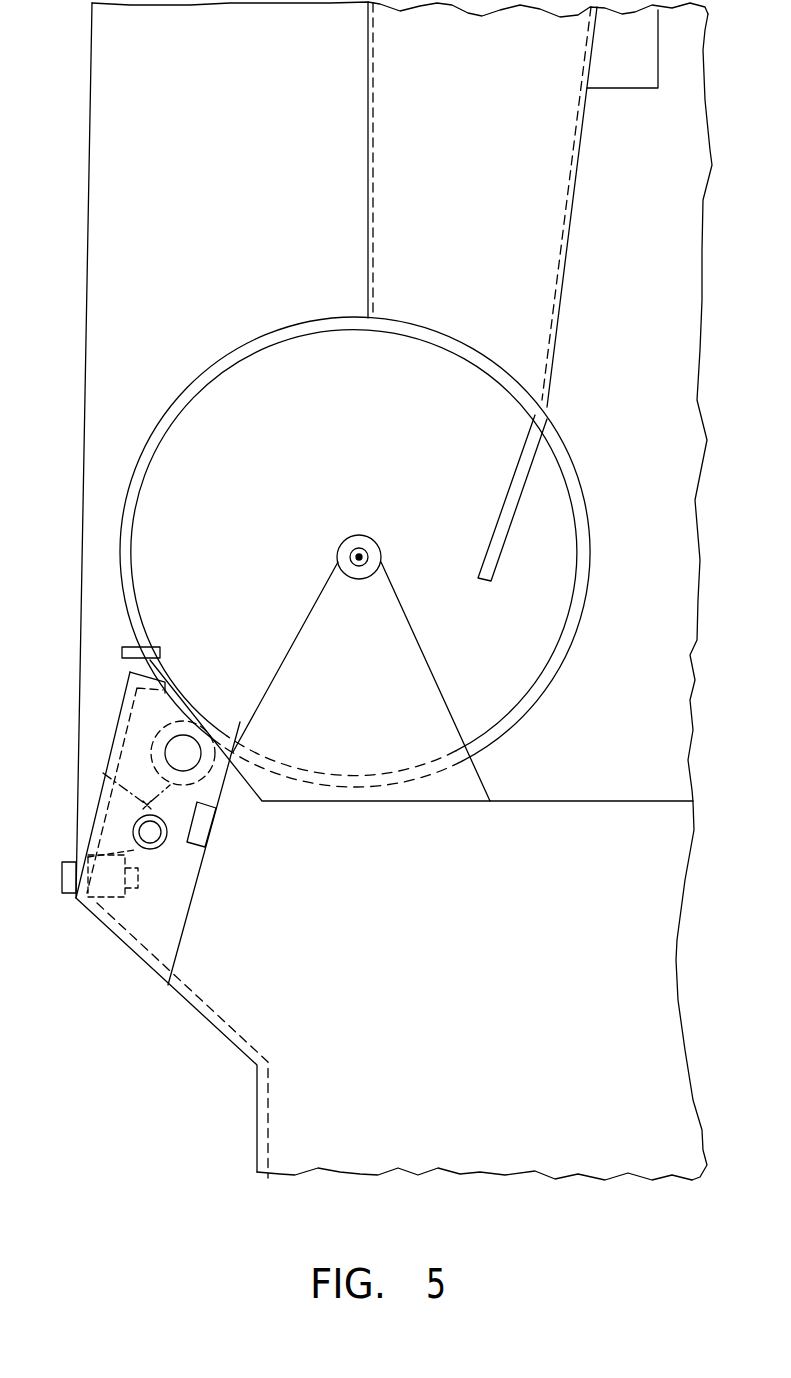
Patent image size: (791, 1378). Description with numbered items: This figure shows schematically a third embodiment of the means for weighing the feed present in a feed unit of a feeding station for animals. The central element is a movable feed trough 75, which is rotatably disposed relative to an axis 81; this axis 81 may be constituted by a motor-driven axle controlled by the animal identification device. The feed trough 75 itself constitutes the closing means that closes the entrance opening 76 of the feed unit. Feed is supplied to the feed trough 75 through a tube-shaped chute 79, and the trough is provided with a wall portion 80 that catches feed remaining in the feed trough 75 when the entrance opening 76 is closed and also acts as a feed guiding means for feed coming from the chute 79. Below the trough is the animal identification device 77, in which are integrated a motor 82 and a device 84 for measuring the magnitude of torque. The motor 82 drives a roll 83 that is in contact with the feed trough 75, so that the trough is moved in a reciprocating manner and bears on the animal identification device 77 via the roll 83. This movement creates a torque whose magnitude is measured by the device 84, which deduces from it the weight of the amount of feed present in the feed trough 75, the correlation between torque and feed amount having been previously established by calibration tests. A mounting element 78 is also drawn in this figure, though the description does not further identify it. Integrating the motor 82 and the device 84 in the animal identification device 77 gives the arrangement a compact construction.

The feed trough 75 is at (552, 657).
The entrance opening 76 is at (283, 333).
The animal identification device 77 is at (142, 918).
The mounting bracket 78 is at (623, 60).
The tube-shaped chute 79 is at (548, 208).
The wall portion 80 is at (518, 486).
The axis 81 is at (359, 557).
The motor 82 is at (160, 843).
The roll 83 is at (208, 764).
The device that measures the magnitude of torque 84 is at (200, 828).